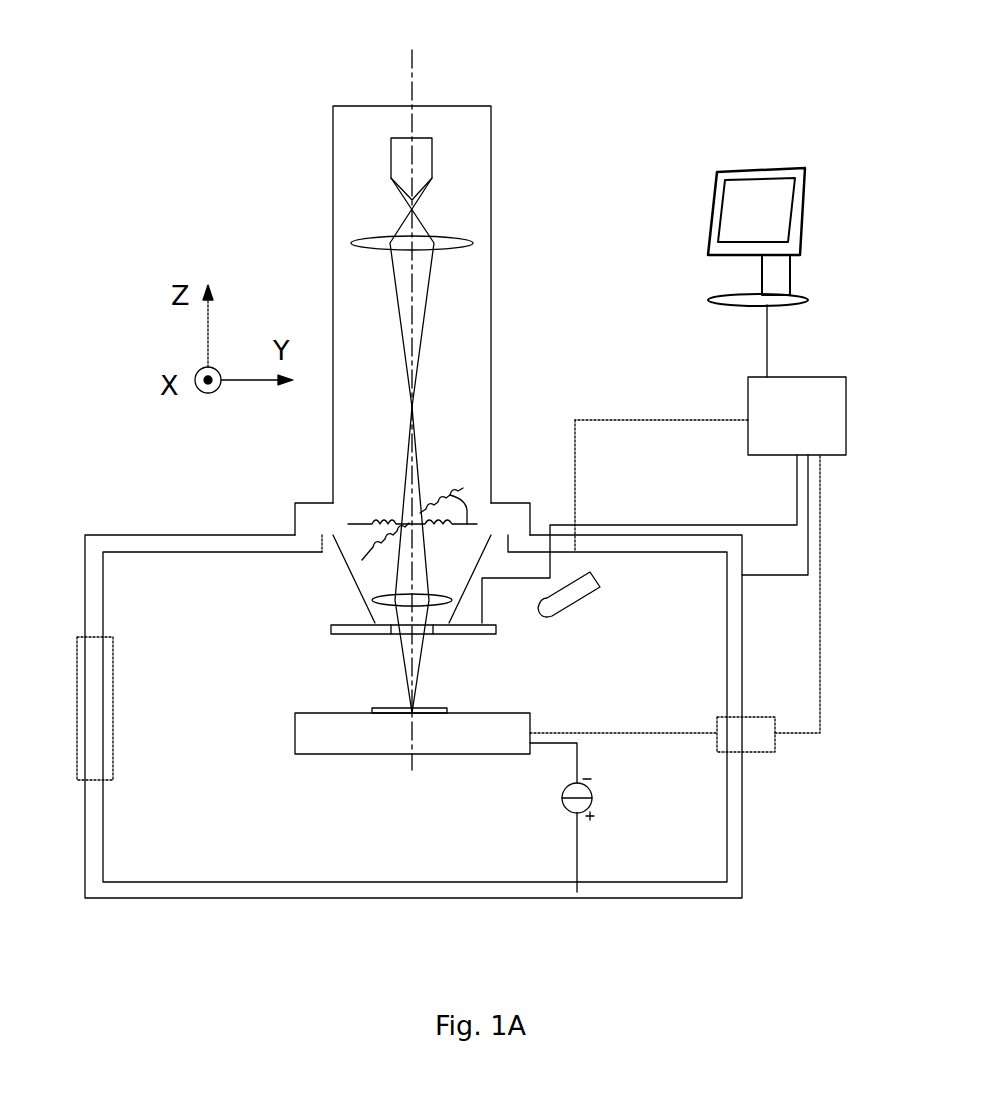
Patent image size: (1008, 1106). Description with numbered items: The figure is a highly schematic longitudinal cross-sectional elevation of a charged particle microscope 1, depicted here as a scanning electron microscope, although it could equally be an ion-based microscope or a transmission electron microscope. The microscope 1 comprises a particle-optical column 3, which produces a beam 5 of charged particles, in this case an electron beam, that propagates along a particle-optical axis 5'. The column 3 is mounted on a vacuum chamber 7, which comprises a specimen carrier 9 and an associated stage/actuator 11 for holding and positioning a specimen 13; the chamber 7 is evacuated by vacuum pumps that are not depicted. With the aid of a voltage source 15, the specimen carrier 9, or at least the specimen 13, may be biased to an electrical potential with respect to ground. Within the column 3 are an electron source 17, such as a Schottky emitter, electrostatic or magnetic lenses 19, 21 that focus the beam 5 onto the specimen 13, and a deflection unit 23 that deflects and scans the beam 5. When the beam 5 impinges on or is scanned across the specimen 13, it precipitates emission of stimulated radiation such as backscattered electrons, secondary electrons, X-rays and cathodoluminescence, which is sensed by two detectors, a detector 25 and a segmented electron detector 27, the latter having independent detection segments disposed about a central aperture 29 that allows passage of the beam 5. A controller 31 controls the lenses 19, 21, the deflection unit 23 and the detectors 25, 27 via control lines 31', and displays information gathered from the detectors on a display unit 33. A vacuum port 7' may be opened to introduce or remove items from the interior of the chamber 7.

The charged particle microscope 1 is at (192, 56).
The particle-optical column 3 is at (286, 212).
The beam 5 is at (439, 643).
The particle-optical axis 5' is at (461, 409).
The vacuum chamber 7 is at (446, 676).
The vacuum port 7' is at (139, 708).
The specimen carrier 9 is at (313, 740).
The stage/actuator 11 is at (730, 730).
The specimen 13 is at (447, 708).
The voltage source 15 is at (565, 800).
The electron source 17 is at (410, 158).
The lens 19 is at (455, 238).
The lens 21 is at (455, 598).
The deflection unit 23 is at (468, 513).
The detector 25 is at (585, 596).
The segmented electron detector 27 is at (336, 605).
The central aperture 29 is at (402, 647).
The controller 31 is at (748, 380).
The control lines 31' is at (697, 486).
The display unit 33 is at (768, 220).